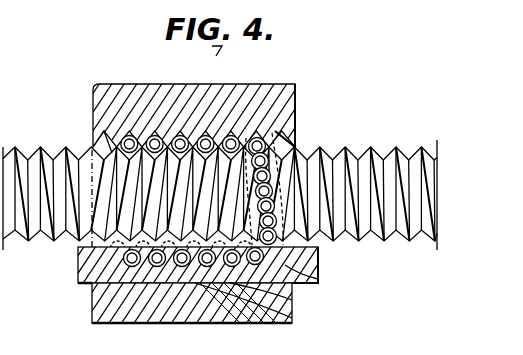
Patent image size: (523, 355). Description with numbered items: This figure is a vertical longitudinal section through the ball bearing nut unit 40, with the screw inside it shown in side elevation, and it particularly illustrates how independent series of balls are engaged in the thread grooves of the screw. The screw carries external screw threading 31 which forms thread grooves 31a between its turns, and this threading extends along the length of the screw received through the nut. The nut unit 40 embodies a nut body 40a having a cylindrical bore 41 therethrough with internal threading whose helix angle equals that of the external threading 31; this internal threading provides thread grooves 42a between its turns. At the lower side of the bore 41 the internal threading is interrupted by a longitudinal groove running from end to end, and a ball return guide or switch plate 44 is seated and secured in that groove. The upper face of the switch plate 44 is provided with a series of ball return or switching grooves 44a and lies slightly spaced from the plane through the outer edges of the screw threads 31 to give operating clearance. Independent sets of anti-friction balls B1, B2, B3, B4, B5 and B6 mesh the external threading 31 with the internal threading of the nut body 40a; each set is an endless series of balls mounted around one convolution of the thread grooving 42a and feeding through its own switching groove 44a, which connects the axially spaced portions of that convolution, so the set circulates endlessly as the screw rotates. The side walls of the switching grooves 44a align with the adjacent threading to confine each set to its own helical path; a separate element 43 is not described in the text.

The external screw threading 31 is at (346, 147).
The thread grooves 31a is at (408, 146).
The ball bearing nut unit 40 is at (143, 77).
The nut body 40a is at (299, 77).
The cylindrical bore 41 is at (294, 143).
The thread grooves of internal threading 42a is at (95, 143).
The lower plate 43 is at (311, 353).
The ball return guide or switch plate 44 is at (307, 263).
The ball return or switching grooves 44a is at (73, 279).
The set of anti-friction balls B1 is at (133, 264).
The set of anti-friction balls B2 is at (160, 264).
The set of anti-friction balls B3 is at (200, 264).
The set of anti-friction balls B4 is at (292, 322).
The set of anti-friction balls B5 is at (295, 303).
The set of anti-friction balls B6 is at (305, 265).